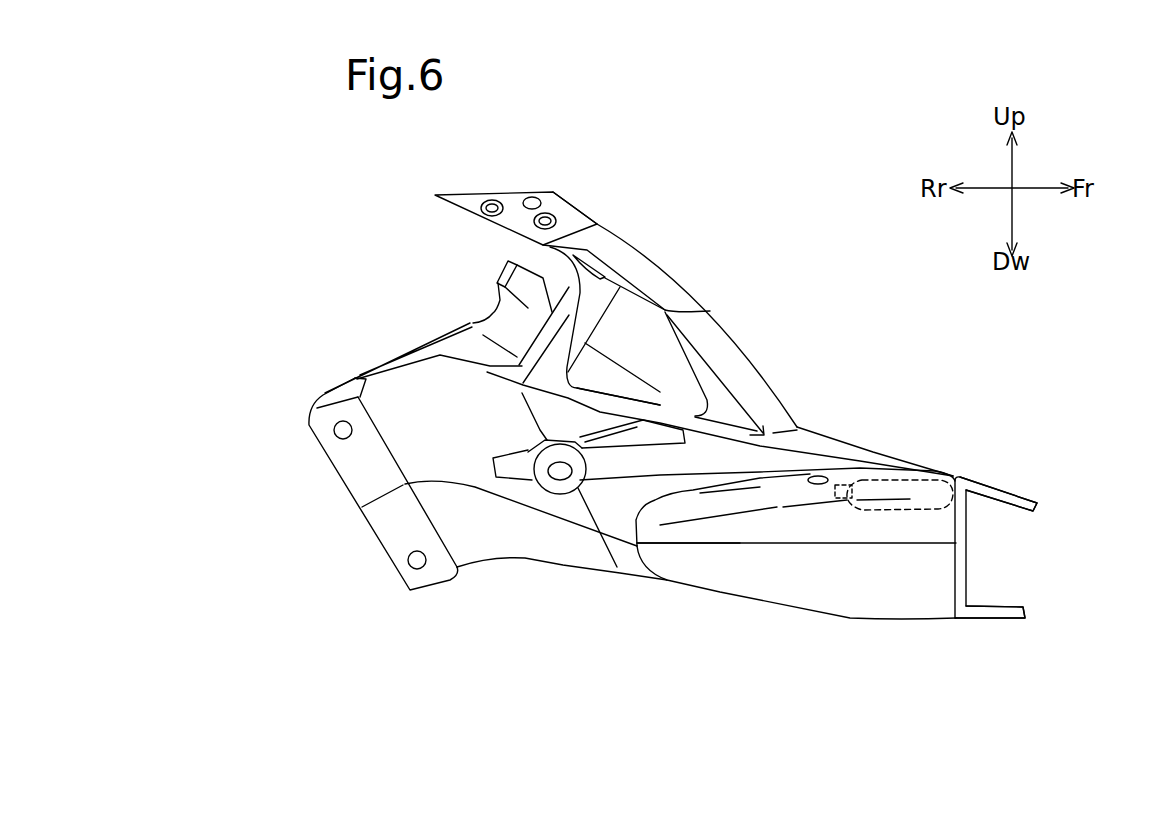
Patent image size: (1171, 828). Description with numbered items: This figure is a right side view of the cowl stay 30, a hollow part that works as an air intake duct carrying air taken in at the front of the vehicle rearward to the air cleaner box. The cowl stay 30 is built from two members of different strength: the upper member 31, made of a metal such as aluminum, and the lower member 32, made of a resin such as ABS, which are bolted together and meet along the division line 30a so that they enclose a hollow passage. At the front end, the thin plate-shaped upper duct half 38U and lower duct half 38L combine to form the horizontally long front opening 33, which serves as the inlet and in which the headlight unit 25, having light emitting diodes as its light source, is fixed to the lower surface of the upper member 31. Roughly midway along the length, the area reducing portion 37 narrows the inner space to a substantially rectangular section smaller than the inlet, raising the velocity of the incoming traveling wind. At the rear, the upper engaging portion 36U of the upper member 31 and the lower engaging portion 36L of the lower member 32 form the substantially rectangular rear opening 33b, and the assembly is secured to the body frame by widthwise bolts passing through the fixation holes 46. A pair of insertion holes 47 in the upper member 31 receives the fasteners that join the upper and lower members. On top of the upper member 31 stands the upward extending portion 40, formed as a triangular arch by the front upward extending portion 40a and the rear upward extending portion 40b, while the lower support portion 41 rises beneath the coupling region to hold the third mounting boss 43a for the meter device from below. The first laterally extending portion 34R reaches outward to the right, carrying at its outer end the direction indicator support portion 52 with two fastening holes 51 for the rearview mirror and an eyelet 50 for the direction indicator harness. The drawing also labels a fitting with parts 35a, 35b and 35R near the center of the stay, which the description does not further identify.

The headlight unit 25 is at (936, 477).
The cowl stay 30 is at (893, 332).
The division line 30a is at (715, 548).
The upper member 31 is at (868, 451).
The lower member 32 is at (786, 609).
The front opening 33 is at (1004, 552).
The rear opening 33b is at (314, 440).
The first laterally extending portion 34R is at (627, 246).
The ring boss 35a is at (540, 482).
The bore 35b is at (561, 480).
The right support bar 35R is at (618, 452).
The upper engaging portion 36U is at (345, 468).
The lower engaging portion 36L is at (378, 522).
The area reducing portion 37 is at (590, 554).
The upper duct half 38U is at (1035, 512).
The lower duct half 38L is at (1025, 615).
The upward extending portion 40 is at (833, 190).
The front upward extending portion 40a is at (730, 343).
The rear upward extending portion 40b is at (600, 318).
The lower support portion 41 is at (617, 383).
The third mounting boss 43a is at (500, 268).
The fixation hole 46 is at (343, 421).
The insertion hole 47 is at (818, 474).
The eyelet 50 is at (532, 195).
The fastening hole 51 is at (491, 199).
The direction indicator support portion 52 is at (587, 219).